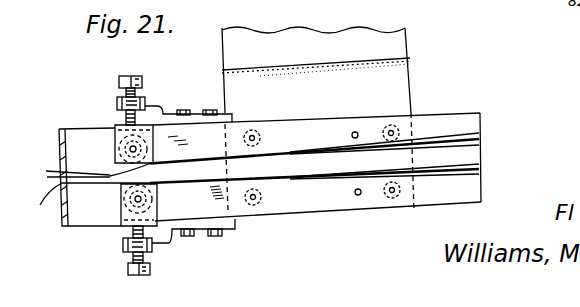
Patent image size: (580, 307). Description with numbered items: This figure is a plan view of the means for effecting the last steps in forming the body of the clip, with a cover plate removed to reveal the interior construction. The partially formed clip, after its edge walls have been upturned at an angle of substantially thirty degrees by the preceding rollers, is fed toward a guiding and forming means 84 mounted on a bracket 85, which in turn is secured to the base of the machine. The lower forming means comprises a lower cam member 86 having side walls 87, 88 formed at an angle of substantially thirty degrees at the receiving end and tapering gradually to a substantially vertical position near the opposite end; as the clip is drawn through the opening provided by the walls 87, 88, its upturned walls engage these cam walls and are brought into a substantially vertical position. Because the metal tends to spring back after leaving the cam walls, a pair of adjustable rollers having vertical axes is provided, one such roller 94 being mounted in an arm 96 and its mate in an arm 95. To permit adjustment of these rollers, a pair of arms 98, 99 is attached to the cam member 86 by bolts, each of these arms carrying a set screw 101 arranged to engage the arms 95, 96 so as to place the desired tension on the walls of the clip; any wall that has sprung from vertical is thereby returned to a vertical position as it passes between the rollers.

The guiding and forming means 84 is at (347, 213).
The bracket 85 is at (412, 58).
The lower cam member 86 is at (482, 183).
The side wall 87 is at (480, 170).
The side wall 88 is at (480, 137).
The adjustable roller 94 is at (50, 173).
The arm 95 is at (122, 228).
The arm 96 is at (158, 116).
The arm 98 is at (196, 111).
The arm 99 is at (237, 222).
The set screw 101 is at (127, 75).